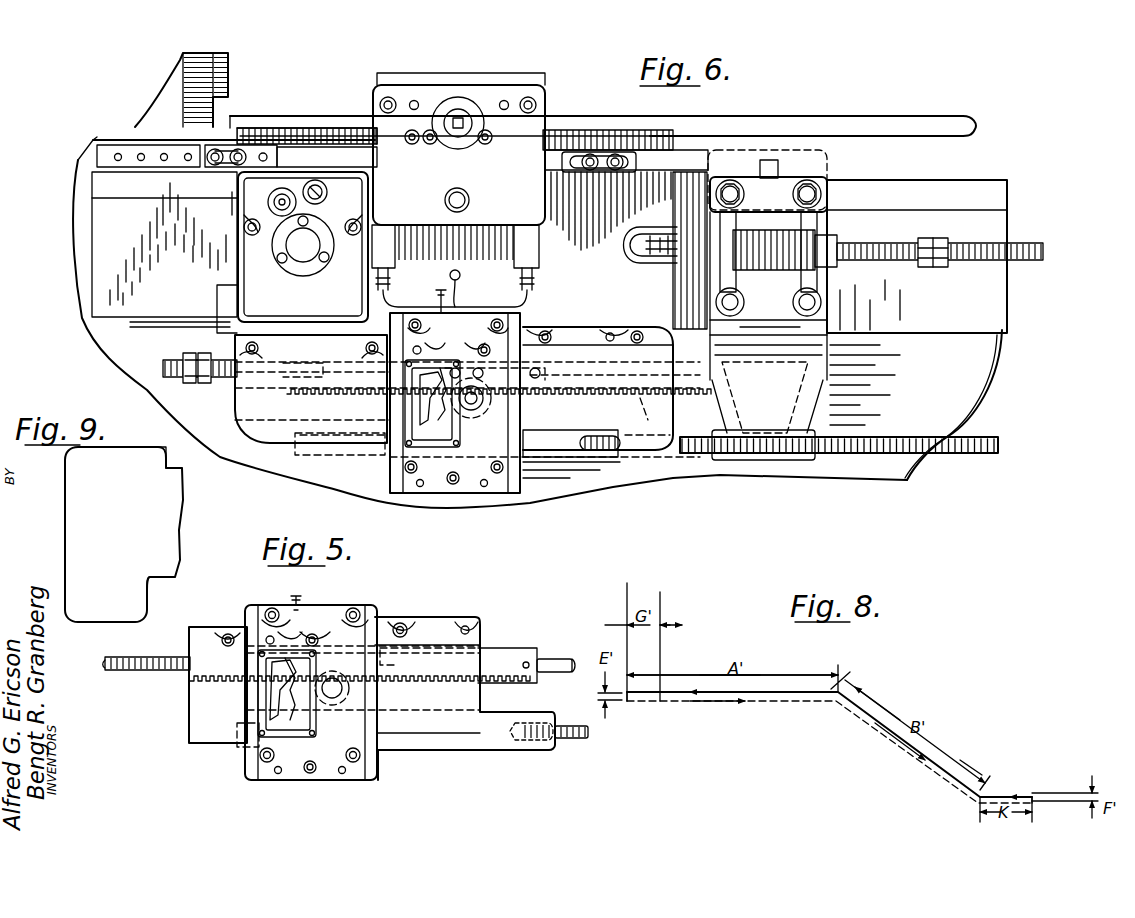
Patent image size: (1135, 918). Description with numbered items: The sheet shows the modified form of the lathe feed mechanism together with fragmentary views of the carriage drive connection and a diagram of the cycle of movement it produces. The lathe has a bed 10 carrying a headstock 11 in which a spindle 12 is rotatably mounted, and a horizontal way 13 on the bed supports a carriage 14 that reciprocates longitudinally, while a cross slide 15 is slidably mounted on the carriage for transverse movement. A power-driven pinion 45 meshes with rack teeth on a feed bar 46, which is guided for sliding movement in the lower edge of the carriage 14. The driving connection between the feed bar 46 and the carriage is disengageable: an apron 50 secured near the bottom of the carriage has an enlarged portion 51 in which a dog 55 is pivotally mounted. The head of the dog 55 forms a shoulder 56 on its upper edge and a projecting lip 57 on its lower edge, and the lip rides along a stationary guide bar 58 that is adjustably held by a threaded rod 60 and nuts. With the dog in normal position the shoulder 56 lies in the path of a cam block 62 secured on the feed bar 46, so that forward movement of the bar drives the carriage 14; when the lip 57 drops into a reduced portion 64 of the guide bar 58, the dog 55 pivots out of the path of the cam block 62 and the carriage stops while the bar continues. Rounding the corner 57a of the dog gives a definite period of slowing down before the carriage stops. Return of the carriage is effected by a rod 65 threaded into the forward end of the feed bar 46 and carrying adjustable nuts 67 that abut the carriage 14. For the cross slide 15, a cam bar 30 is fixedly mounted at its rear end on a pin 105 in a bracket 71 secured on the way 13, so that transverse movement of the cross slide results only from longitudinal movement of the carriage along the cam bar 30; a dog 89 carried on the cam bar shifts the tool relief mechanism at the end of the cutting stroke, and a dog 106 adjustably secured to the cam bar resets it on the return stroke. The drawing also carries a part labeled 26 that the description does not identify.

In FIG. 6, the bed 10 is at (968, 383).
In FIG. 6, the headstock 11 is at (150, 118).
In FIG. 6, the spindle 12 is at (228, 70).
In FIG. 6, the horizontal way 13 is at (1000, 212).
In FIG. 6, the carriage 14 is at (625, 229).
In FIG. 6, the cross slide 15 is at (495, 92).
In FIG. 6, the stop 26 is at (647, 416).
In FIG. 6, the cam bar 30 is at (697, 162).
In FIG. 6, the pinion 45 is at (520, 403).
In FIG. 5, the pinion 45 is at (370, 697).
In FIG. 6, the feed bar 46 is at (365, 388).
In FIG. 6, the apron 50 is at (252, 423).
In FIG. 5, the apron 50 is at (250, 705).
In FIG. 5, the enlarged portion 51 is at (267, 775).
In FIG. 6, the dog 55 is at (418, 430).
In FIG. 9, the dog 55 is at (78, 497).
In FIG. 5, the dog 55 is at (285, 695).
In FIG. 6, the shoulder 56 is at (425, 385).
In FIG. 9, the shoulder 56 is at (162, 461).
In FIG. 5, the shoulder 56 is at (285, 682).
In FIG. 6, the lip 57 is at (450, 428).
In FIG. 9, the lip 57 is at (113, 605).
In FIG. 5, the lip 57 is at (313, 718).
In FIG. 9, the rounded corner 57a is at (147, 612).
In FIG. 6, the guide bar 58 is at (558, 455).
In FIG. 5, the guide bar 58 is at (512, 740).
In FIG. 5, the threaded rod 60 is at (572, 742).
In FIG. 6, the cam block 62 is at (540, 378).
In FIG. 5, the cam block 62 is at (395, 665).
In FIG. 6, the reduced portion 64 is at (300, 455).
In FIG. 5, the reduced portion 64 is at (238, 742).
In FIG. 6, the rod 65 is at (170, 374).
In FIG. 5, the rod 65 is at (120, 670).
In FIG. 6, the nuts 67 is at (190, 352).
In FIG. 6, the bracket 71 is at (820, 283).
In FIG. 6, the dog 89 is at (268, 150).
In FIG. 6, the pin 105 is at (800, 185).
In FIG. 6, the dog 106 is at (603, 152).